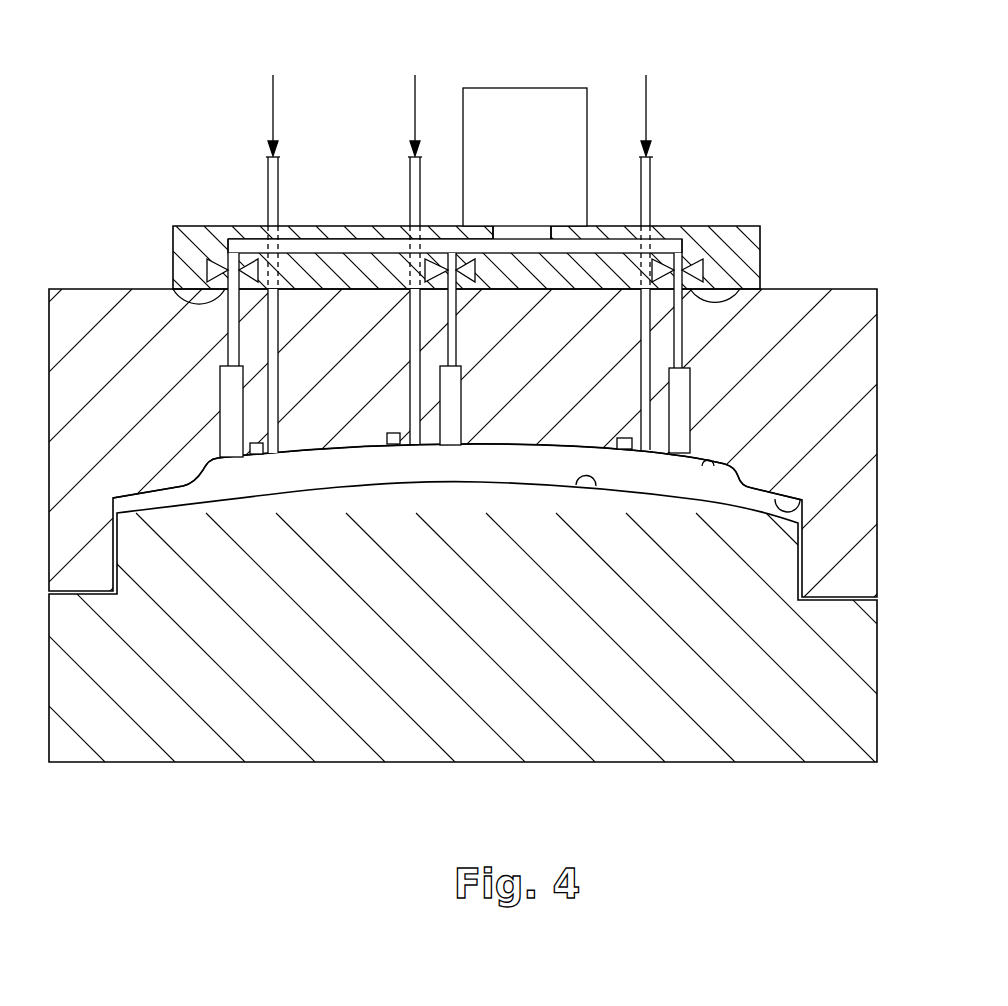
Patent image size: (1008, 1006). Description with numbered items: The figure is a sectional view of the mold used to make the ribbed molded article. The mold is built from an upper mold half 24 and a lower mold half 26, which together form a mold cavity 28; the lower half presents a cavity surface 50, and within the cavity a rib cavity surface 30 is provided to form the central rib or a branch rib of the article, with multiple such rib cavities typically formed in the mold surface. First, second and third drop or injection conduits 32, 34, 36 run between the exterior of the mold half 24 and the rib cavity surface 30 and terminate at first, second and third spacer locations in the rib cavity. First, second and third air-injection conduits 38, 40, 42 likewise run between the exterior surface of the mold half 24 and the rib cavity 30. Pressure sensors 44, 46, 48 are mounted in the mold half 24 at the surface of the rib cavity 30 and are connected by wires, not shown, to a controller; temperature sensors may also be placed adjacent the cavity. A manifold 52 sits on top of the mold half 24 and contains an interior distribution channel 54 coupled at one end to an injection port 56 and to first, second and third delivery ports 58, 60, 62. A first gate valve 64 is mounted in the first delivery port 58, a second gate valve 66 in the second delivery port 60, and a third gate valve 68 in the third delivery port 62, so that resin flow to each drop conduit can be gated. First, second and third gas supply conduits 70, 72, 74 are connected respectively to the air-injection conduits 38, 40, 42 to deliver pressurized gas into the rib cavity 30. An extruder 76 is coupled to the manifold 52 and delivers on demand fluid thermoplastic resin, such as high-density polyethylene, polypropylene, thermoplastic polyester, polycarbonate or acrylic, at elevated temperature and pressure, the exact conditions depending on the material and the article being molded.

The mold half 24 is at (858, 410).
The mold half 26 is at (862, 662).
The cavity 28 is at (806, 510).
The rib cavity surface 30 is at (712, 465).
The first drop conduit 32 is at (219, 389).
The second drop conduit 34 is at (466, 402).
The third drop conduit 36 is at (692, 393).
The first air-injection conduit 38 is at (281, 363).
The second air-injection conduit 40 is at (409, 371).
The third air-injection conduit 42 is at (640, 373).
The sensor 44 is at (257, 443).
The second pressure sensor 46 is at (395, 433).
The third pressure sensor 48 is at (623, 440).
The cavity surface 50 is at (588, 488).
The manifold 52 is at (168, 218).
The interior distribution channel 54 is at (333, 237).
The injection port 56 is at (498, 240).
The first delivery port 58 is at (218, 288).
The second delivery port 60 is at (444, 288).
The third delivery port 62 is at (716, 284).
The first gate valve 64 is at (210, 262).
The second gate valve 66 is at (483, 290).
The third gate valve 68 is at (698, 260).
The first gas supply conduit 70 is at (267, 195).
The second gas supply conduit 72 is at (409, 185).
The third gas supply conduit 74 is at (652, 200).
The extruder 76 is at (516, 150).